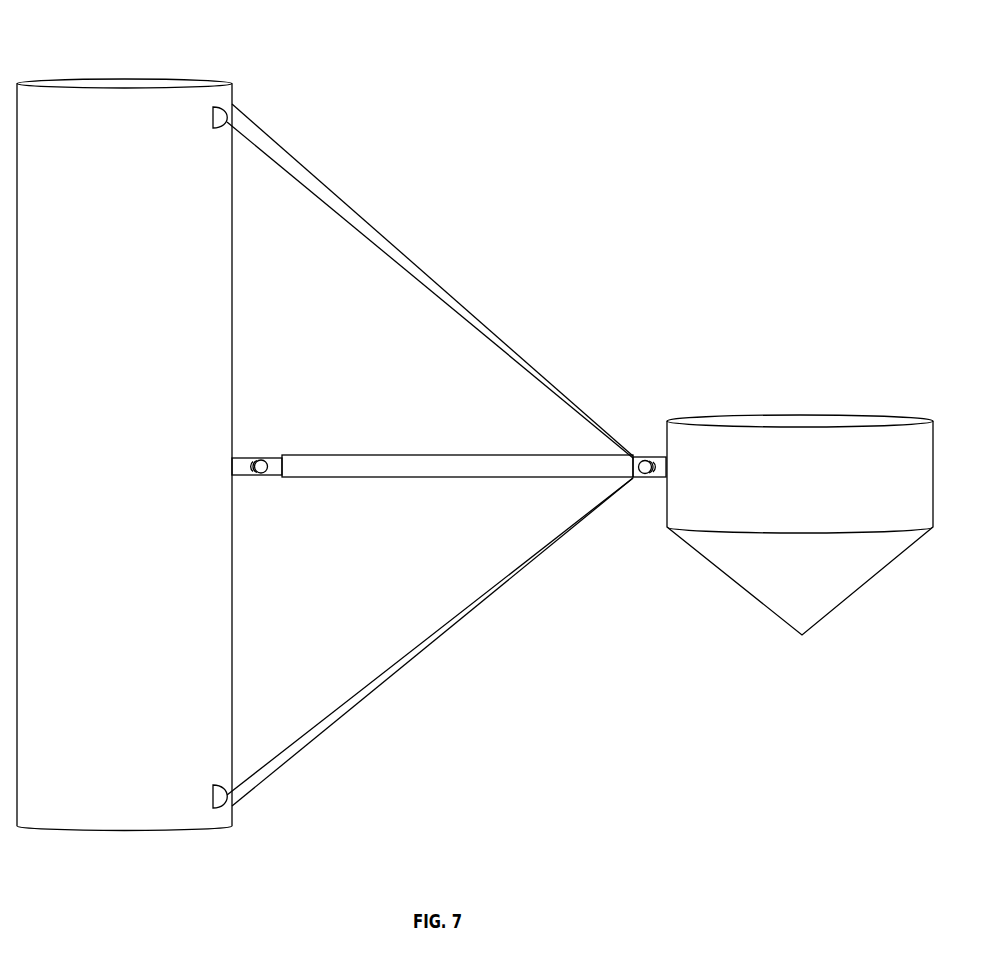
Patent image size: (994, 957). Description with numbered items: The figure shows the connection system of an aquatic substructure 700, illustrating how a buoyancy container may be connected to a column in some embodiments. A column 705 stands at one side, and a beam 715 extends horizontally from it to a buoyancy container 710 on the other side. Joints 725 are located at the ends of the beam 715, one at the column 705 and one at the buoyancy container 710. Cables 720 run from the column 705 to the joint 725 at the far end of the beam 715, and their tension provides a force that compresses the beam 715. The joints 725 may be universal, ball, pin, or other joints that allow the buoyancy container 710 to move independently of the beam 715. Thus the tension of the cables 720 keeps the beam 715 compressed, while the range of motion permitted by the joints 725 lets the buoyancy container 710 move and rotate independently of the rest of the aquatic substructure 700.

The aquatic substructure 700 is at (601, 68).
The column 705 is at (114, 276).
The buoyancy container 710 is at (806, 492).
The beam 715 is at (457, 481).
The cables 720 is at (423, 456).
The joints 725 is at (259, 450).